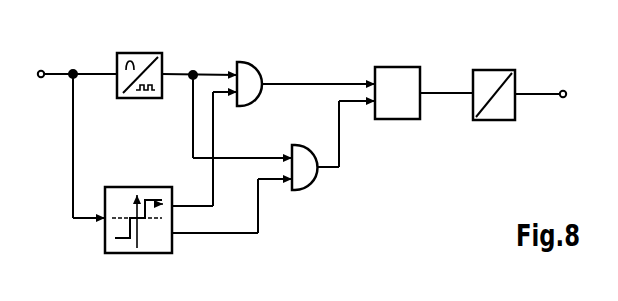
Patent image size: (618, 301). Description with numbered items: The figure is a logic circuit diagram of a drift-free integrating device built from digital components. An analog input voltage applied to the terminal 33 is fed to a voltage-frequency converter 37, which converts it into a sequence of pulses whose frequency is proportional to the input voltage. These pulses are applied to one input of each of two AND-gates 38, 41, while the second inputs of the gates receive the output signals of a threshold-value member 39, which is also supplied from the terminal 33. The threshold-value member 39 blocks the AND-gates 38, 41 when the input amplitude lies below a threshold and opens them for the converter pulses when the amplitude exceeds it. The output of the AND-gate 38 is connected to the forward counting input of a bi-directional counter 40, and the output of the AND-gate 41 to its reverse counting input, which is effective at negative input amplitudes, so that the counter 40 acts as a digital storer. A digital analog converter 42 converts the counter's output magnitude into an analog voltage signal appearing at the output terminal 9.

The terminal 33 is at (67, 139).
The voltage-frequency converter 37 is at (136, 53).
The AND-gate 38 is at (246, 62).
The threshold-value member 39 is at (157, 253).
The bi-directional counter 40 is at (397, 67).
The AND-gate 41 is at (298, 190).
The digital analog converter 42 is at (493, 70).
The output terminal 9 is at (548, 96).